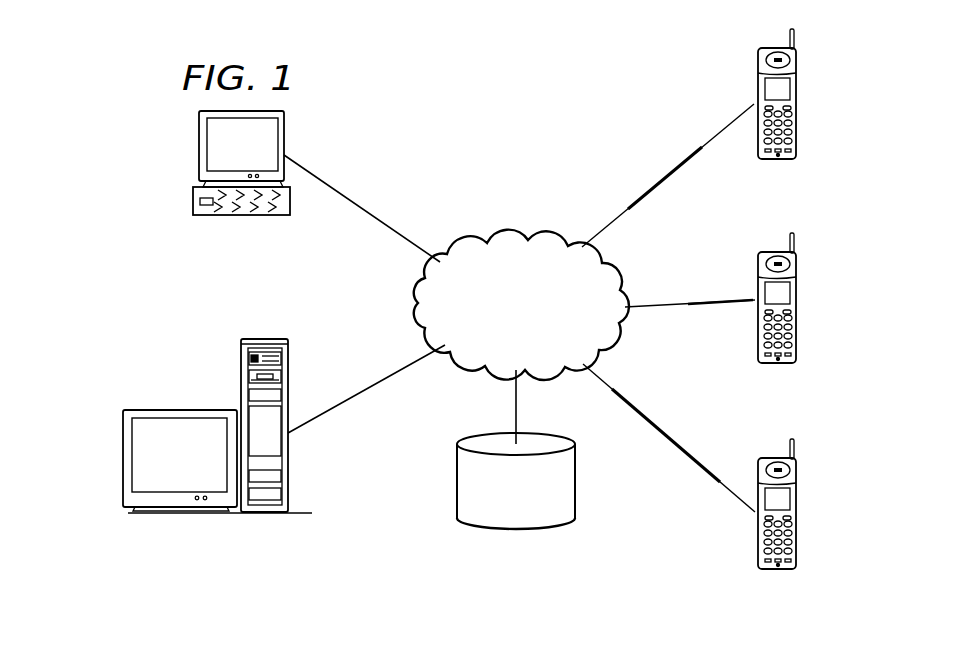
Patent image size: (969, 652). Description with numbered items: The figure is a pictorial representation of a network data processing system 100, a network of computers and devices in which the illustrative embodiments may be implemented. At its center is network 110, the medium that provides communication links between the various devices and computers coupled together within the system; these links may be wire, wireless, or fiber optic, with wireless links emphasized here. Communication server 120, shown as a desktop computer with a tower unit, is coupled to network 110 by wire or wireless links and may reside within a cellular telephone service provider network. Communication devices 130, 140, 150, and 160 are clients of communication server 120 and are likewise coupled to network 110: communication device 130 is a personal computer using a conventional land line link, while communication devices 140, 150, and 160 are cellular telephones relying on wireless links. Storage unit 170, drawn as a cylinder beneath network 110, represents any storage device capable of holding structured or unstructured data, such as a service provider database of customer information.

The network data processing system 100 is at (581, 138).
The network 110 is at (492, 246).
The communication server 120 is at (123, 460).
The communication device 130 is at (199, 150).
The communication device 140 is at (800, 104).
The communication device 150 is at (798, 305).
The communication device 160 is at (798, 518).
The storage unit 170 is at (520, 528).